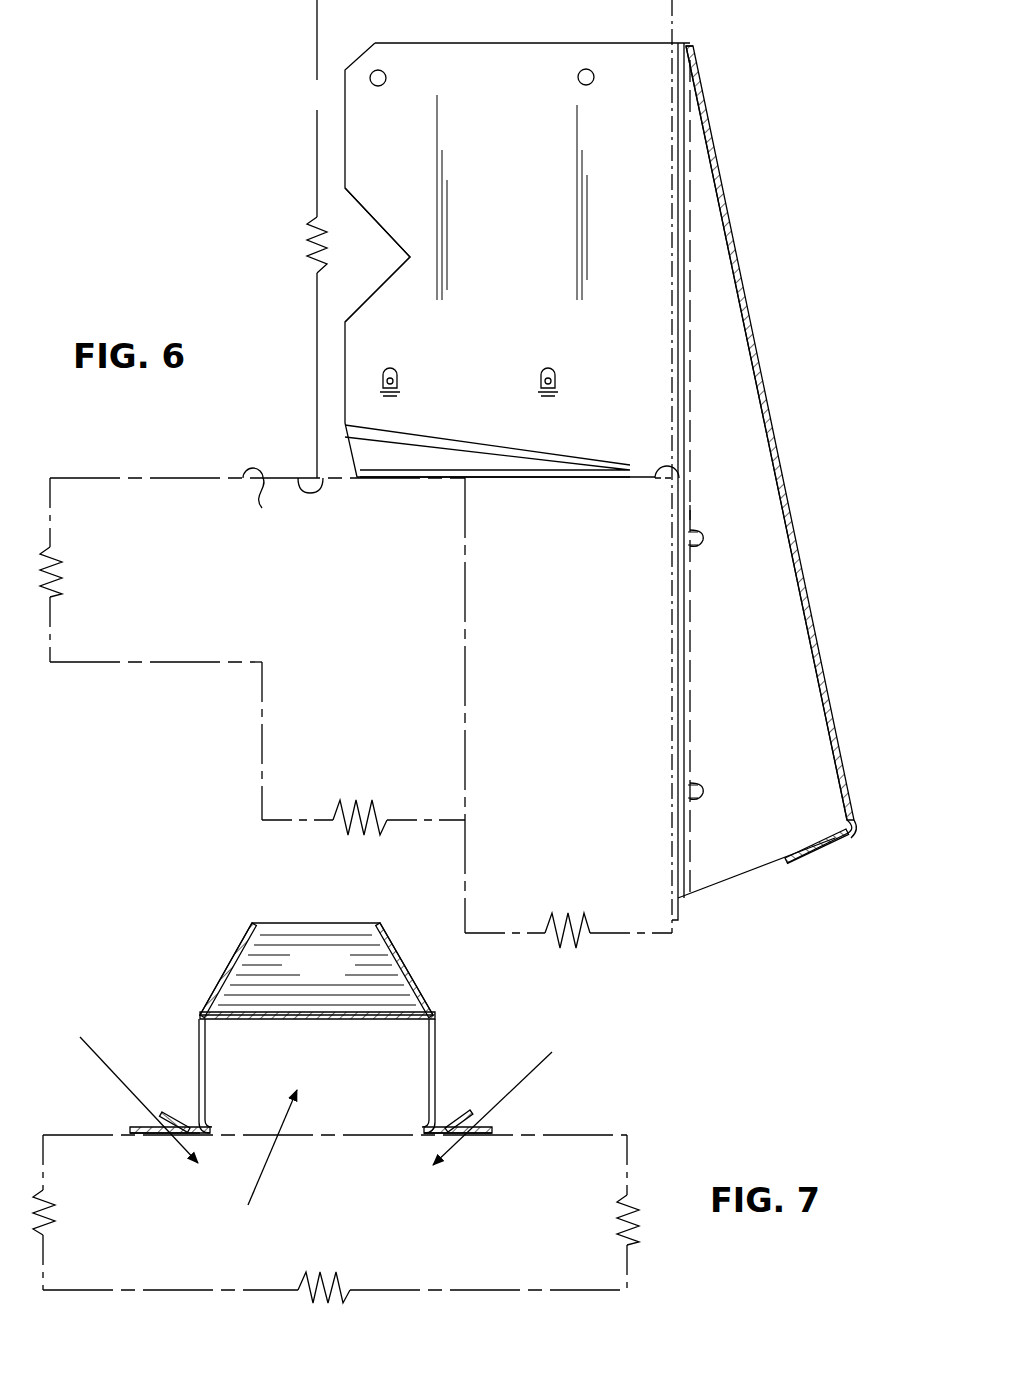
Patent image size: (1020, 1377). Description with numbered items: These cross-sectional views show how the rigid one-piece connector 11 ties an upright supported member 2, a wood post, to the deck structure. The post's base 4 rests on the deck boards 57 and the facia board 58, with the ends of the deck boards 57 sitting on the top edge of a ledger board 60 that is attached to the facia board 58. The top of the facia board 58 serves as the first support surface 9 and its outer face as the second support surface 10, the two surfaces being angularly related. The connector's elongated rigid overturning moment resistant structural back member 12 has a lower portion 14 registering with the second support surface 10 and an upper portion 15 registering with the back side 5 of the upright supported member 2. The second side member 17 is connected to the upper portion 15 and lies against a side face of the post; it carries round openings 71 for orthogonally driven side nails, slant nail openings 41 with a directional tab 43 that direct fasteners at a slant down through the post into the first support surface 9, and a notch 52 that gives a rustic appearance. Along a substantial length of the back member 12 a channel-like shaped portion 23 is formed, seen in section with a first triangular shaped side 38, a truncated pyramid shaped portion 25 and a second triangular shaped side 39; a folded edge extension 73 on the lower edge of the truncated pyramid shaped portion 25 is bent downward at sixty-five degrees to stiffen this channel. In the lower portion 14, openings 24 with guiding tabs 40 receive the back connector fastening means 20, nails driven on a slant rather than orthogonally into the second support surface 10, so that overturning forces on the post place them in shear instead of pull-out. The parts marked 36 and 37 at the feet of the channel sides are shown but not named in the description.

In FIG. 6, the upright supported member 2 is at (312, 52).
In FIG. 6, the base 4 is at (298, 470).
In FIG. 6, the back side 5 is at (672, 22).
In FIG. 6, the first support surface 9 is at (262, 508).
In FIG. 6, the second support surface 10 is at (678, 920).
In FIG. 6, the rigid one-piece connector 11 is at (700, 44).
In FIG. 6, the elongated rigid overturning moment resistant structural back member 12 is at (778, 458).
In FIG. 7, the elongated rigid overturning moment resistant structural back member 12 is at (324, 1009).
In FIG. 6, the lower portion 14 is at (842, 752).
In FIG. 6, the upper portion 15 is at (708, 135).
In FIG. 6, the second side member 17 is at (528, 240).
In FIG. 7, the back connector fastening means 20 is at (110, 1065).
In FIG. 7, the channel-like shaped portion 23 is at (261, 1168).
In FIG. 7, the openings 24 is at (166, 1137).
In FIG. 6, the truncated pyramid shaped portion 25 is at (778, 458).
In FIG. 7, the truncated pyramid shaped portion 25 is at (337, 980).
In FIG. 7, the flange 36 is at (492, 1130).
In FIG. 6, the flange 37 is at (690, 515).
In FIG. 7, the flange 37 is at (140, 1127).
In FIG. 7, the first triangular shaped side 38 is at (437, 1055).
In FIG. 6, the second triangular shaped side 39 is at (760, 630).
In FIG. 7, the second triangular shaped side 39 is at (198, 1045).
In FIG. 6, the tabs 40 is at (706, 538).
In FIG. 7, the tabs 40 is at (175, 1110).
In FIG. 6, the slant nail openings 41 is at (388, 372).
In FIG. 6, the directional tab 43 is at (400, 378).
In FIG. 6, the notch 52 is at (373, 222).
In FIG. 6, the deck boards 57 is at (76, 476).
In FIG. 6, the facia board 58 is at (636, 940).
In FIG. 7, the facia board 58 is at (630, 1250).
In FIG. 6, the ledger board 60 is at (262, 722).
In FIG. 6, the openings 71 is at (387, 76).
In FIG. 6, the folded edge extension 73 is at (818, 852).